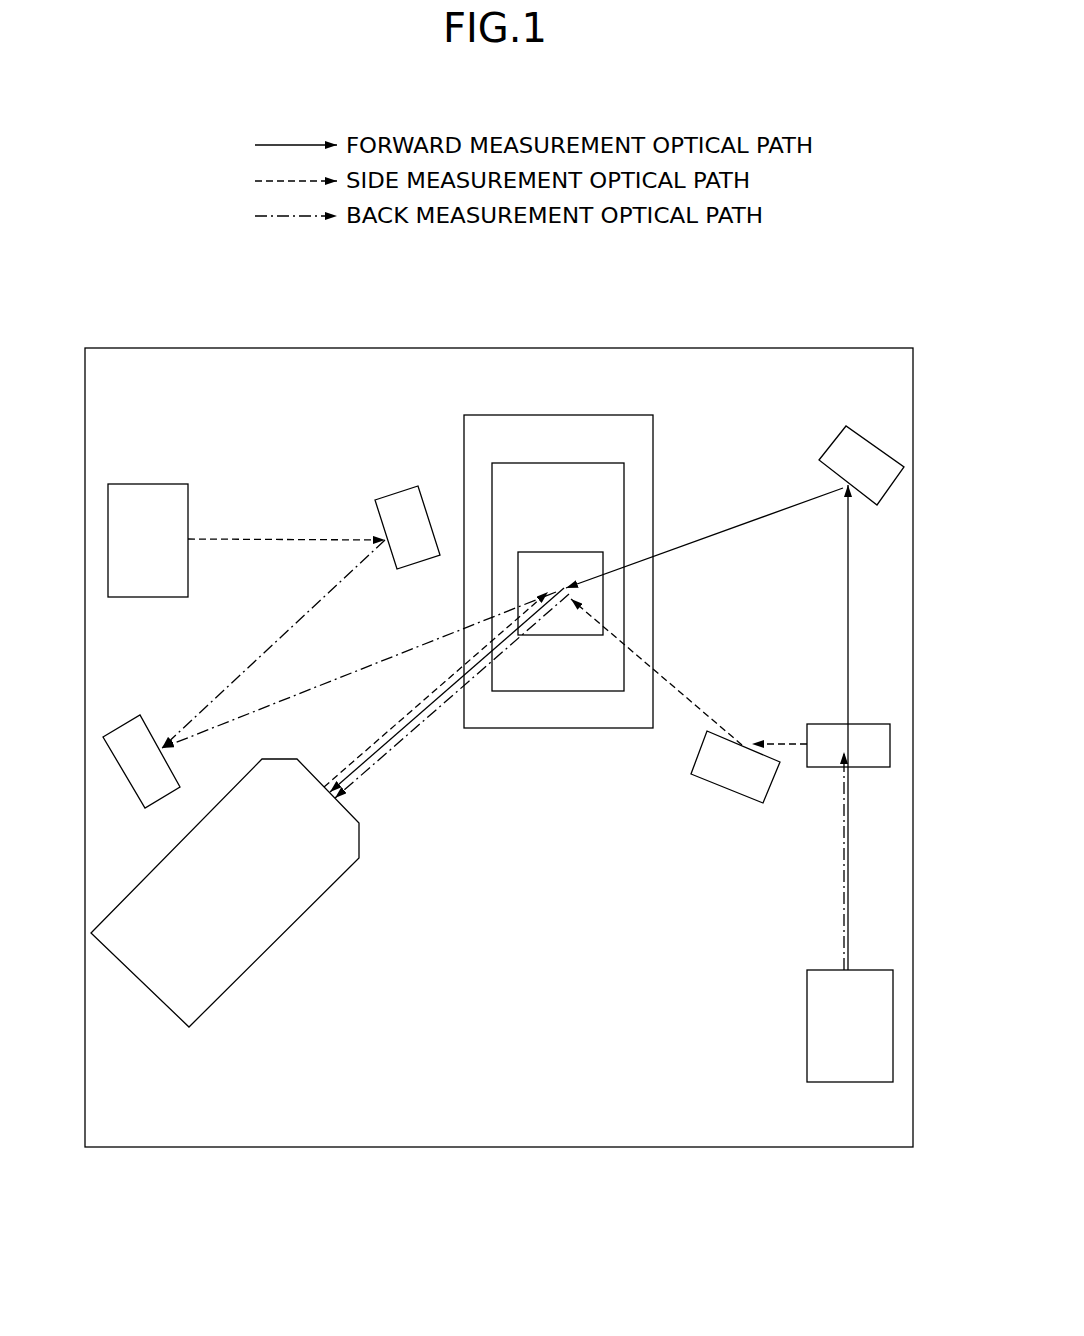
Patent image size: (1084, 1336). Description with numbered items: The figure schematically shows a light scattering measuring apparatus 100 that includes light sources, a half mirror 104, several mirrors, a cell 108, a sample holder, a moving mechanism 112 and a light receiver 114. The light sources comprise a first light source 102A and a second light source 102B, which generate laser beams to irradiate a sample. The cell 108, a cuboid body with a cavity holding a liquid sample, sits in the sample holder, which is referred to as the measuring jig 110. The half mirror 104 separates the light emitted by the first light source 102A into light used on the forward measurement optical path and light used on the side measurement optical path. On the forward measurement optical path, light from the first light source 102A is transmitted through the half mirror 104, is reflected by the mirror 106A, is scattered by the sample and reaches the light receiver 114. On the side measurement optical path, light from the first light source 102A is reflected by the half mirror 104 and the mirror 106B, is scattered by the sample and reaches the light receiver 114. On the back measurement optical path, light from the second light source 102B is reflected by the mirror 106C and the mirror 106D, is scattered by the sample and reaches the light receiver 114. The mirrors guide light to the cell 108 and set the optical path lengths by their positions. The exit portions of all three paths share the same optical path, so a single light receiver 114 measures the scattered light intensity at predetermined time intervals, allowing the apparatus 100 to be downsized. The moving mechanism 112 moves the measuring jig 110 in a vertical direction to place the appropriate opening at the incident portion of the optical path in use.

The light scattering measuring apparatus 100 is at (483, 1178).
The first light source 102A is at (823, 970).
The second light source 102B is at (148, 484).
The half mirror 104 is at (819, 724).
The mirror 106A is at (855, 425).
The mirror 106B is at (728, 790).
The mirror 106C is at (397, 494).
The mirror 106D is at (148, 728).
The cell 108 is at (603, 593).
The measuring jig 110 is at (624, 492).
The moving mechanism 112 is at (612, 415).
The light receiver 114 is at (270, 947).